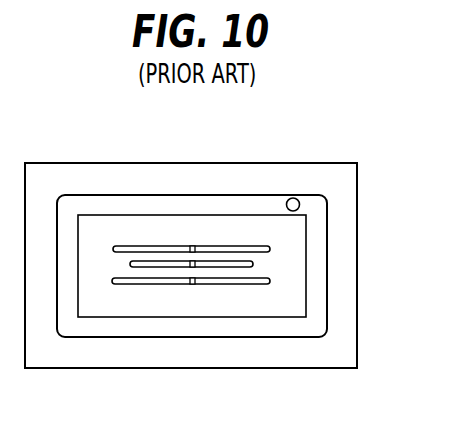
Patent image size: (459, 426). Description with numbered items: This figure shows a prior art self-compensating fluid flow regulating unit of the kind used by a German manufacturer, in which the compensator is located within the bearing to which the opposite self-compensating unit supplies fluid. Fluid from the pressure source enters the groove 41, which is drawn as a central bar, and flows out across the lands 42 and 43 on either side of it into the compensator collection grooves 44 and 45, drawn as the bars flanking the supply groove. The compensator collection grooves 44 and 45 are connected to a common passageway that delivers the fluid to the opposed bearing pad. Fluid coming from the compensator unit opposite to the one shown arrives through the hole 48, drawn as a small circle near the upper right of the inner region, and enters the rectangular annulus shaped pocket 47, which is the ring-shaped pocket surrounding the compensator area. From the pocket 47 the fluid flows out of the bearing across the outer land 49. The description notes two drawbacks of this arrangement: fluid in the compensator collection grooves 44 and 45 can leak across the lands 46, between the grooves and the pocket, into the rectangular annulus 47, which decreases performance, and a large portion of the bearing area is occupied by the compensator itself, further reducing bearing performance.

The groove 41 is at (127, 255).
The land 42 is at (168, 273).
The land 43 is at (167, 255).
The compensator collection groove 44 is at (182, 243).
The compensator collection groove 45 is at (195, 285).
The lands 46 is at (242, 230).
The rectangular annulus shaped pocket 47 is at (268, 205).
The hole 48 is at (305, 200).
The land 49 is at (350, 197).